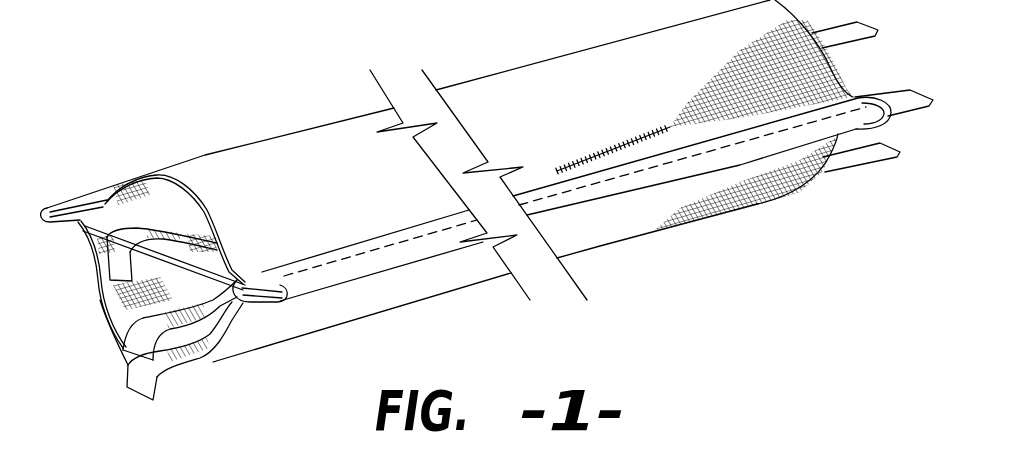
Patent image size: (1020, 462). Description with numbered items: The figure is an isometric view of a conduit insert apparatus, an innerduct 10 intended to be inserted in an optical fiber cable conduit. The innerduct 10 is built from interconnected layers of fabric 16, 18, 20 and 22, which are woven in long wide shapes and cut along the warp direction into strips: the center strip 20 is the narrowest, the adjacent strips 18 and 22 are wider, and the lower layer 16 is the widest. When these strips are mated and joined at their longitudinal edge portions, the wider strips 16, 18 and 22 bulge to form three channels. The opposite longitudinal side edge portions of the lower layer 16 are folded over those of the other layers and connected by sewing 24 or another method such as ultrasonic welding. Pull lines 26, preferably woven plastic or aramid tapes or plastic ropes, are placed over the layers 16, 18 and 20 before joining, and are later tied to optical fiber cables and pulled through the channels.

The insert 10 is at (566, 125).
The lower layer 16 is at (207, 347).
The layer of fabric 18 is at (218, 318).
The center strip 20 is at (80, 232).
The layer of fabric 22 is at (531, 62).
The sewing 24 is at (693, 155).
The pull lines 26 is at (115, 267).